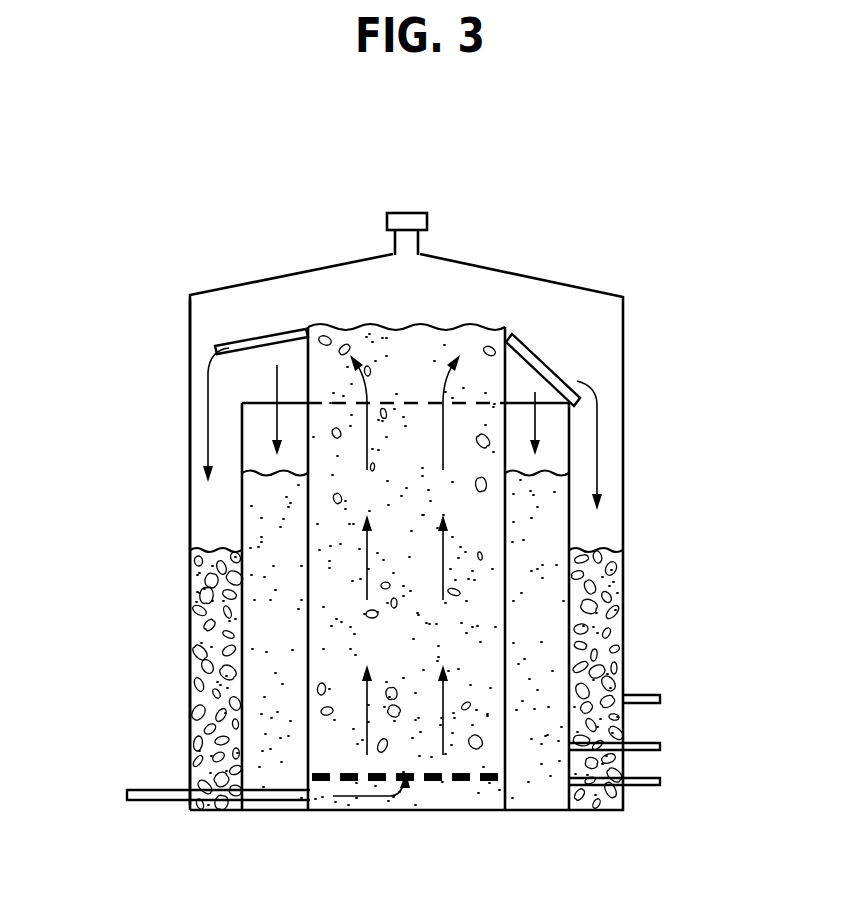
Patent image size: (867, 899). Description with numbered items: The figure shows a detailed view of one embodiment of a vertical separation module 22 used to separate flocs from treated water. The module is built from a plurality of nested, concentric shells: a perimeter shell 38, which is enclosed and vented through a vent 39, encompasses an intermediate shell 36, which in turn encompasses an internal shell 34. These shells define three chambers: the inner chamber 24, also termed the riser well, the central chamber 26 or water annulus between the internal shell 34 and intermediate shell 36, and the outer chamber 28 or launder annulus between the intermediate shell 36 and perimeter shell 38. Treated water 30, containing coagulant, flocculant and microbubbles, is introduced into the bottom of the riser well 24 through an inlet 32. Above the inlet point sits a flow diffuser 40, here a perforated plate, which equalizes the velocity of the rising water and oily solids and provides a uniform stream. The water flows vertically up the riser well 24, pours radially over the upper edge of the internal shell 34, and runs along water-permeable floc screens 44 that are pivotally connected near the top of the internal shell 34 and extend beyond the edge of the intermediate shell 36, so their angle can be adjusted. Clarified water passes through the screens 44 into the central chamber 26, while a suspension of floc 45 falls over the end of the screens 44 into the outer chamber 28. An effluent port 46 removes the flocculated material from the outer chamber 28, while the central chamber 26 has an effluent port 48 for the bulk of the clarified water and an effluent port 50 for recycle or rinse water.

The separation module 22 is at (630, 232).
The inner chamber 24 is at (406, 548).
The central chamber 26 is at (405, 581).
The outer chamber 28 is at (406, 450).
The treated water 30 is at (106, 795).
The inlet 32 is at (318, 797).
The internal shell 34 is at (308, 697).
The intermediate shell 36 is at (242, 648).
The perimeter shell 38 is at (192, 612).
The vent 39 is at (408, 214).
The flow diffuser 40 is at (477, 782).
The floc screen 44 is at (548, 363).
The floc 45 is at (212, 580).
The effluent port 46 is at (665, 699).
The effluent port 48 is at (665, 781).
The effluent port 50 is at (665, 747).